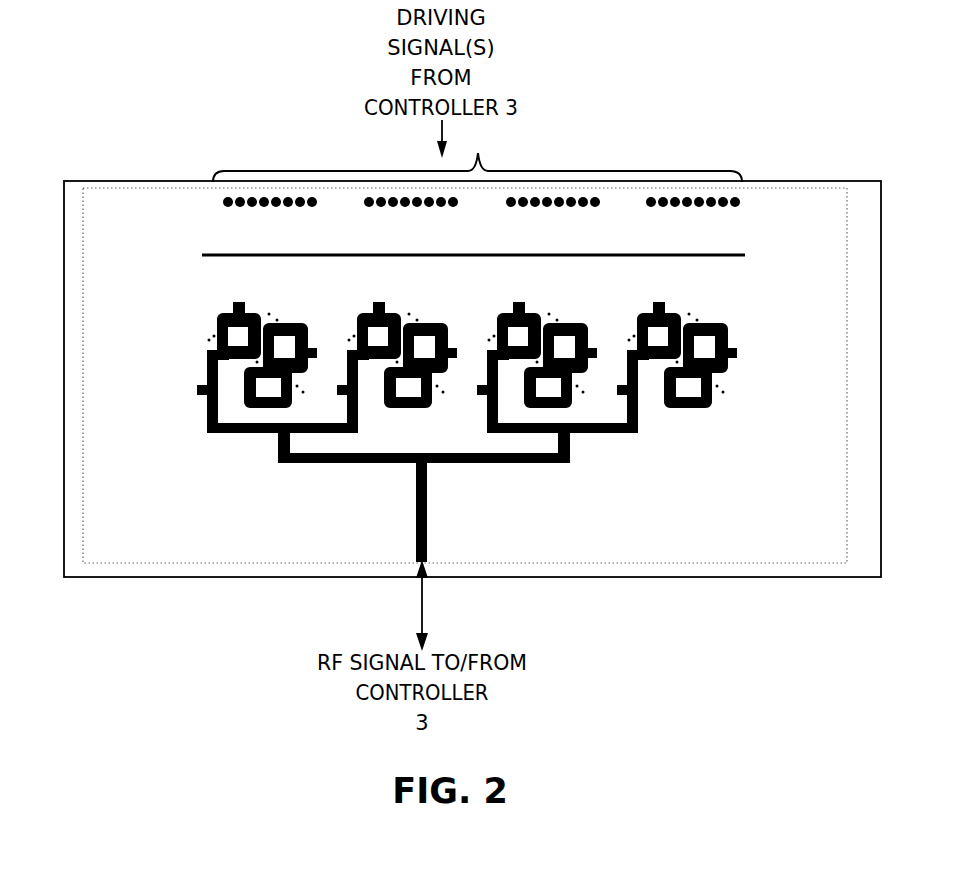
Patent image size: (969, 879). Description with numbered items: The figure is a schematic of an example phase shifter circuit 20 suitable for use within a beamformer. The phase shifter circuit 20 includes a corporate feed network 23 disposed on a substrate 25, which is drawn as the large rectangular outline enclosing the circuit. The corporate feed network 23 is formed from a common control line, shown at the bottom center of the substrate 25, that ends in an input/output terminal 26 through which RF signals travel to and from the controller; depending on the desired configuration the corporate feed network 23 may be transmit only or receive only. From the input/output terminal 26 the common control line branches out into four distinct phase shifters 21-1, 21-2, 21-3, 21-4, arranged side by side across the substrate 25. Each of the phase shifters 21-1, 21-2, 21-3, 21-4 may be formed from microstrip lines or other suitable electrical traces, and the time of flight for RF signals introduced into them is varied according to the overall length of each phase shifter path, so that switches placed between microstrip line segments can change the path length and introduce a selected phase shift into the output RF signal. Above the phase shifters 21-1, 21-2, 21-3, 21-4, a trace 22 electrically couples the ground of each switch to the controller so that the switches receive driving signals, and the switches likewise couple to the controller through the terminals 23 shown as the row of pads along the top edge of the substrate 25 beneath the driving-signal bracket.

The phase shifter circuit 20 is at (126, 89).
The substrate 25 is at (115, 188).
The trace 22 is at (360, 253).
The corporate feed network 23 is at (575, 171).
The phase shifter 21-1 is at (198, 305).
The phase shifter 21-2 is at (342, 305).
The phase shifter 21-3 is at (486, 305).
The phase shifter 21-4 is at (630, 305).
The input/output terminal 26 is at (418, 564).